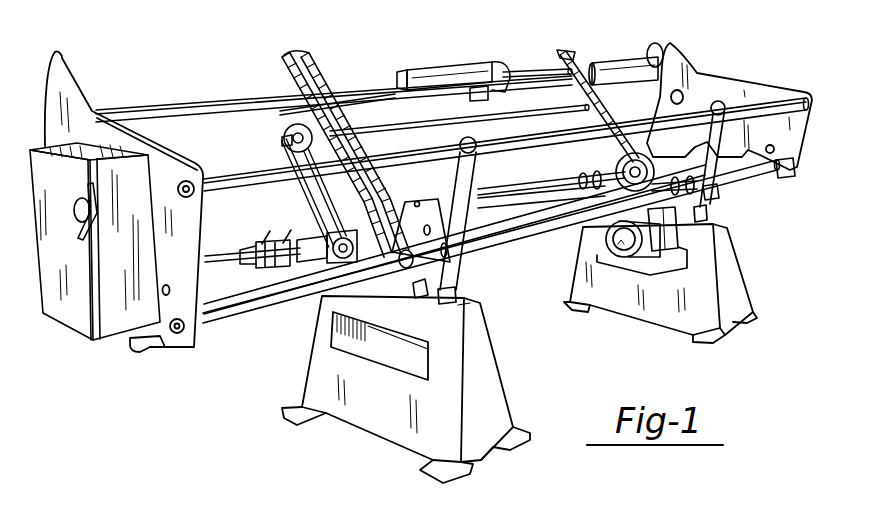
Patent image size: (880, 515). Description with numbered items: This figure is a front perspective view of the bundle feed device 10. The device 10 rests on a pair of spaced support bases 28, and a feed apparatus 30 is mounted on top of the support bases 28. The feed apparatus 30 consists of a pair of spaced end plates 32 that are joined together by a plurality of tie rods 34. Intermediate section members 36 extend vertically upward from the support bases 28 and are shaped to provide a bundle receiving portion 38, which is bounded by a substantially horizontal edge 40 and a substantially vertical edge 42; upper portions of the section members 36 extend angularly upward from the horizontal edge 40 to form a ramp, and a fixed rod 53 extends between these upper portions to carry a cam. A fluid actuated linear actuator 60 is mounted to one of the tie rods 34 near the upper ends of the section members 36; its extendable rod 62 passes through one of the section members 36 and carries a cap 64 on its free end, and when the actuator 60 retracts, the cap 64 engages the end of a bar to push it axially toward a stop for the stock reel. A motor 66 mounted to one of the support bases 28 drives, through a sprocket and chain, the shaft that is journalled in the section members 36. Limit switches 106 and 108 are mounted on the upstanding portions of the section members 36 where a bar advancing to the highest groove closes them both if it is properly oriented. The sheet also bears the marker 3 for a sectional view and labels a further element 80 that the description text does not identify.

The section line 3- 3 is at (227, 38).
The bundle feed device 10 is at (176, 82).
The support bases 28 is at (513, 413).
The feed apparatus 30 is at (703, 53).
The end plates 32 is at (62, 82).
The tie rods 34 is at (373, 97).
The intermediate section members 36 is at (587, 160).
The bundle receiving portion 38 is at (398, 186).
The horizontal edge 40 is at (393, 268).
The vertical edge 42 is at (450, 260).
The fixed rod 53 is at (512, 115).
The fluid actuated linear actuator 60 is at (460, 70).
The extendable rod 62 is at (652, 47).
The cap 64 is at (663, 47).
The motor 66 is at (643, 263).
The drive chain 80 is at (276, 270).
The limit switch 106 is at (307, 53).
The limit switch 108 is at (553, 50).